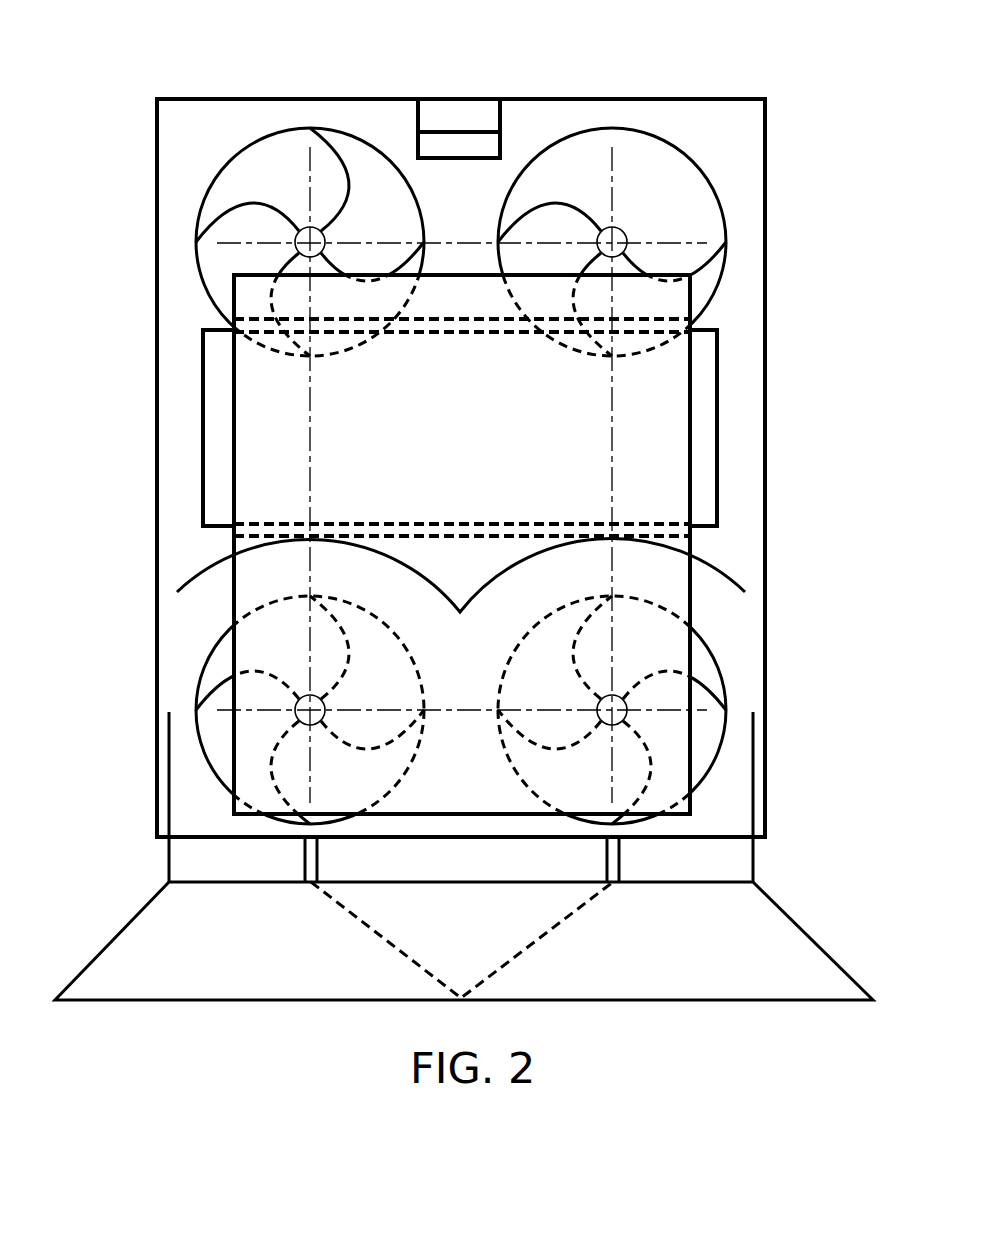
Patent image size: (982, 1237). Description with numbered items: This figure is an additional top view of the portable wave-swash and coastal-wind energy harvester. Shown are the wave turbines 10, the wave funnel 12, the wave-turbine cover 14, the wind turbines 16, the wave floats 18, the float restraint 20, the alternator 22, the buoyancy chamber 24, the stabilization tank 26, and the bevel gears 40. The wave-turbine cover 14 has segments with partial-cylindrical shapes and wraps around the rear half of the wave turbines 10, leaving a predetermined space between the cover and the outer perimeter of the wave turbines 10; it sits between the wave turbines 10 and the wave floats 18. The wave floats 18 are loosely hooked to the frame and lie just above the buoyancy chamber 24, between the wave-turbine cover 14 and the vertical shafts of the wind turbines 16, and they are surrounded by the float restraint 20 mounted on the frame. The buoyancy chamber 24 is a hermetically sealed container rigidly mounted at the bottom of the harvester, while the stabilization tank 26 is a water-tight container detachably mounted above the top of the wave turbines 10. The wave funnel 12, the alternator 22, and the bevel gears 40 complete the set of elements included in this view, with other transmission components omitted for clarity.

The wave turbines 10 is at (213, 640).
The wave funnel 12 is at (113, 920).
The wave-turbine cover 14 is at (722, 572).
The wind turbines 16 is at (213, 170).
The wave floats 18 is at (718, 433).
The float restraint 20 is at (650, 317).
The alternator 22 is at (502, 120).
The buoyancy chamber 24 is at (357, 99).
The stabilization tank 26 is at (203, 440).
The bevel gears 40 is at (298, 240).